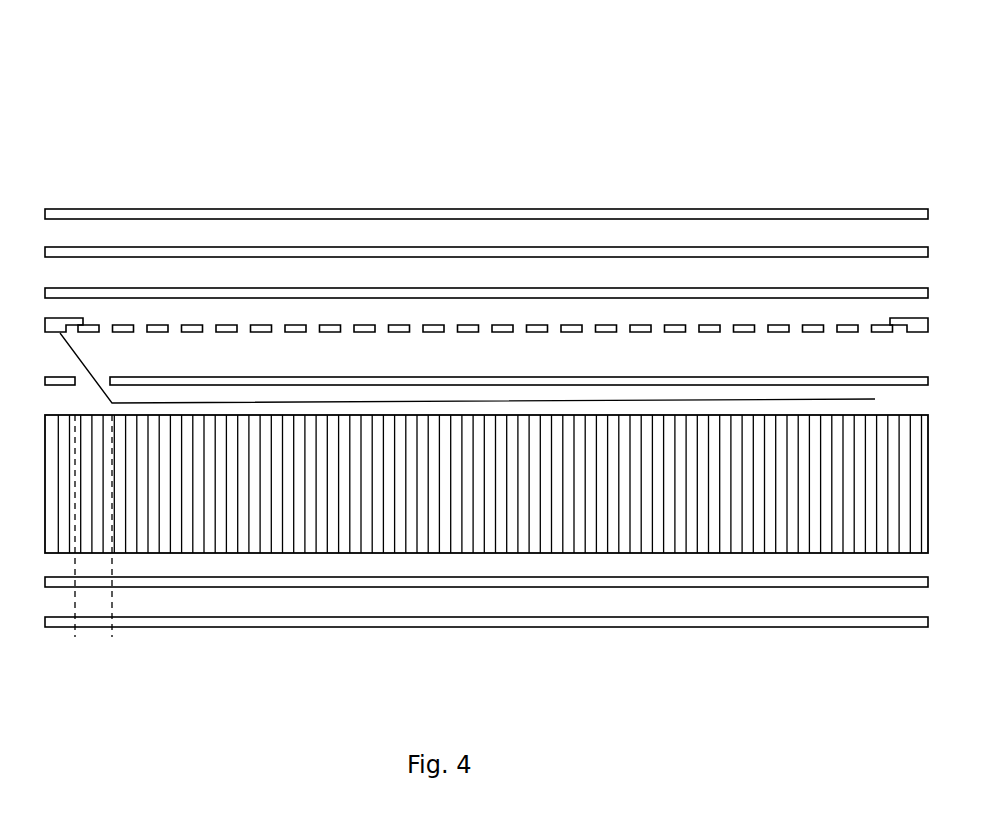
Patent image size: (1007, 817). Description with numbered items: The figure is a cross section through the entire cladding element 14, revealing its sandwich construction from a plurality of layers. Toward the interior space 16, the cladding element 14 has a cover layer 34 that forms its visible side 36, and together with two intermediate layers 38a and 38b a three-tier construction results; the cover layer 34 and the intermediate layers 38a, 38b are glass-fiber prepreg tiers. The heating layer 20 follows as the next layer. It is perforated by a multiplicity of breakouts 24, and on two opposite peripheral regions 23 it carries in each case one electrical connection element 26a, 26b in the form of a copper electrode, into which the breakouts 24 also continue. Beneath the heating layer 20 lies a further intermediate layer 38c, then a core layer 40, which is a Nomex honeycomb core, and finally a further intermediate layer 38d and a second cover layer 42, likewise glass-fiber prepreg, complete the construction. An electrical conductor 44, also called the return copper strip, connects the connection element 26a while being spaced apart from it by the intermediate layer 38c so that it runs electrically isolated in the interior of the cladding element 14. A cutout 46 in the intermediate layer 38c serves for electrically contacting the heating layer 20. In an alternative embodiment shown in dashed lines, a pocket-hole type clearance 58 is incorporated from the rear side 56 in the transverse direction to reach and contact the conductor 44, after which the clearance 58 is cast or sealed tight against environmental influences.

The cladding element 14 is at (260, 113).
The interior space 16 is at (642, 167).
The heating layer 20 is at (485, 233).
The peripheral regions 23 is at (137, 183).
The breakouts 24 is at (350, 327).
The connection element 26a is at (66, 318).
The connection element 26b is at (895, 318).
The cover layer 34 is at (562, 208).
The visible side 36 is at (352, 193).
The intermediate layer 38a is at (265, 247).
The intermediate layer 38b is at (457, 290).
The intermediate layer 38c is at (690, 377).
The intermediate layer 38d is at (180, 587).
The core layer 40 is at (733, 553).
The second cover layer 42 is at (293, 627).
The electrical conductor 44 is at (552, 400).
The cutout 46 is at (142, 682).
The rear side 56 is at (363, 642).
The clearance 58 is at (90, 652).